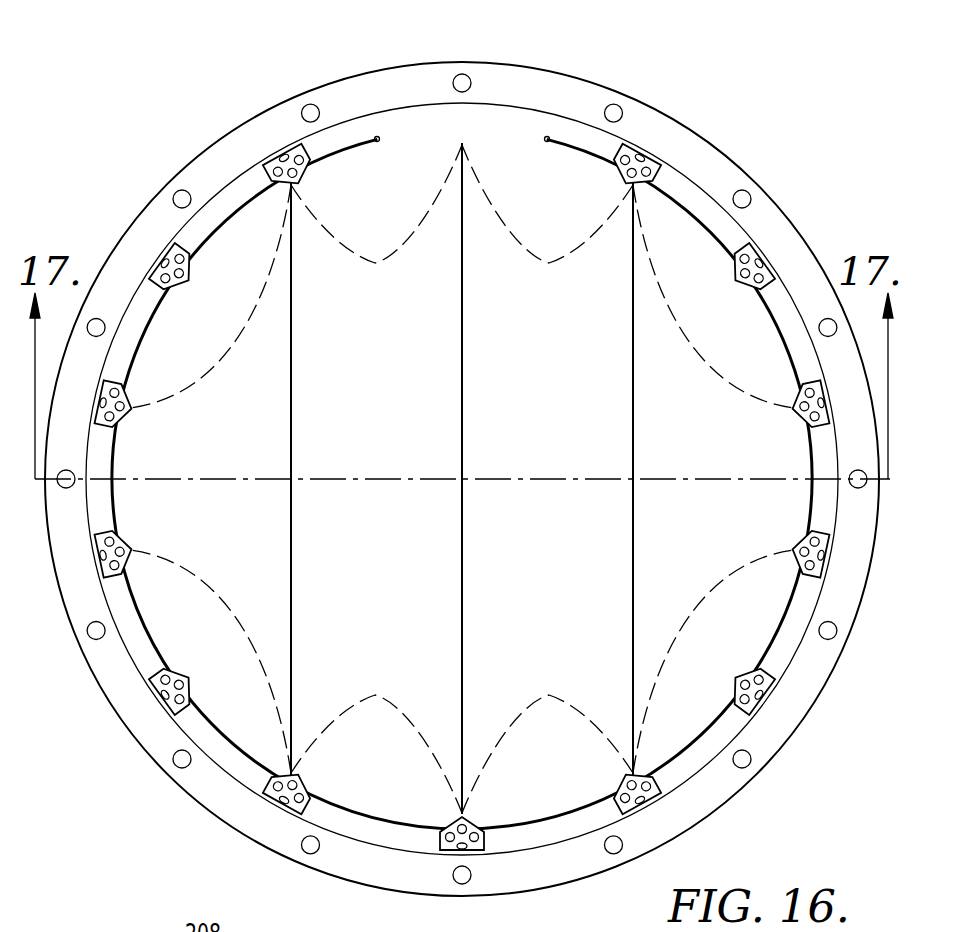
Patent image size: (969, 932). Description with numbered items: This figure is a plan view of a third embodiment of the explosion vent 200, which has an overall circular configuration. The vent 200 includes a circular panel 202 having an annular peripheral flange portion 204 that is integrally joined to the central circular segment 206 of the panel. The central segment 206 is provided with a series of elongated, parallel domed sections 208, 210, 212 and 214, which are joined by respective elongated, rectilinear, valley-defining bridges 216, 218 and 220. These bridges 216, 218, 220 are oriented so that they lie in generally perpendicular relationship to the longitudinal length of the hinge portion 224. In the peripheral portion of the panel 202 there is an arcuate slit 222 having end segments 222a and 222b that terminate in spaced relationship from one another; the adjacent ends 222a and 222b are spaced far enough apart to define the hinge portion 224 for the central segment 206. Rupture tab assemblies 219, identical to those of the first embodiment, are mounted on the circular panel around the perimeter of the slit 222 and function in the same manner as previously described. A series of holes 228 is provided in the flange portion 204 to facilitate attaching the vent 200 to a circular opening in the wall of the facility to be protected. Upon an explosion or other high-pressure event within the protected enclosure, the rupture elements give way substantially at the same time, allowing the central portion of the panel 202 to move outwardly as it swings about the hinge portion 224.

The explosion vent 200 is at (697, 101).
The circular panel 202 is at (762, 184).
The annular peripheral flange portion 204 is at (200, 165).
The central circular segment 206 is at (395, 187).
The domed section 208 is at (215, 438).
The domed section 210 is at (375, 438).
The domed section 212 is at (550, 438).
The domed section 214 is at (712, 438).
The rectilinear bridge 216 is at (292, 340).
The rectilinear bridge 218 is at (464, 322).
The rectilinear bridge 220 is at (633, 590).
The rupture tab assembly 219 is at (186, 286).
The arcuate slit 222 is at (146, 632).
The end segment of slit 222a is at (357, 148).
The end segment of slit 222b is at (570, 148).
The hinge portion 224 is at (462, 119).
The holes 228 is at (174, 766).